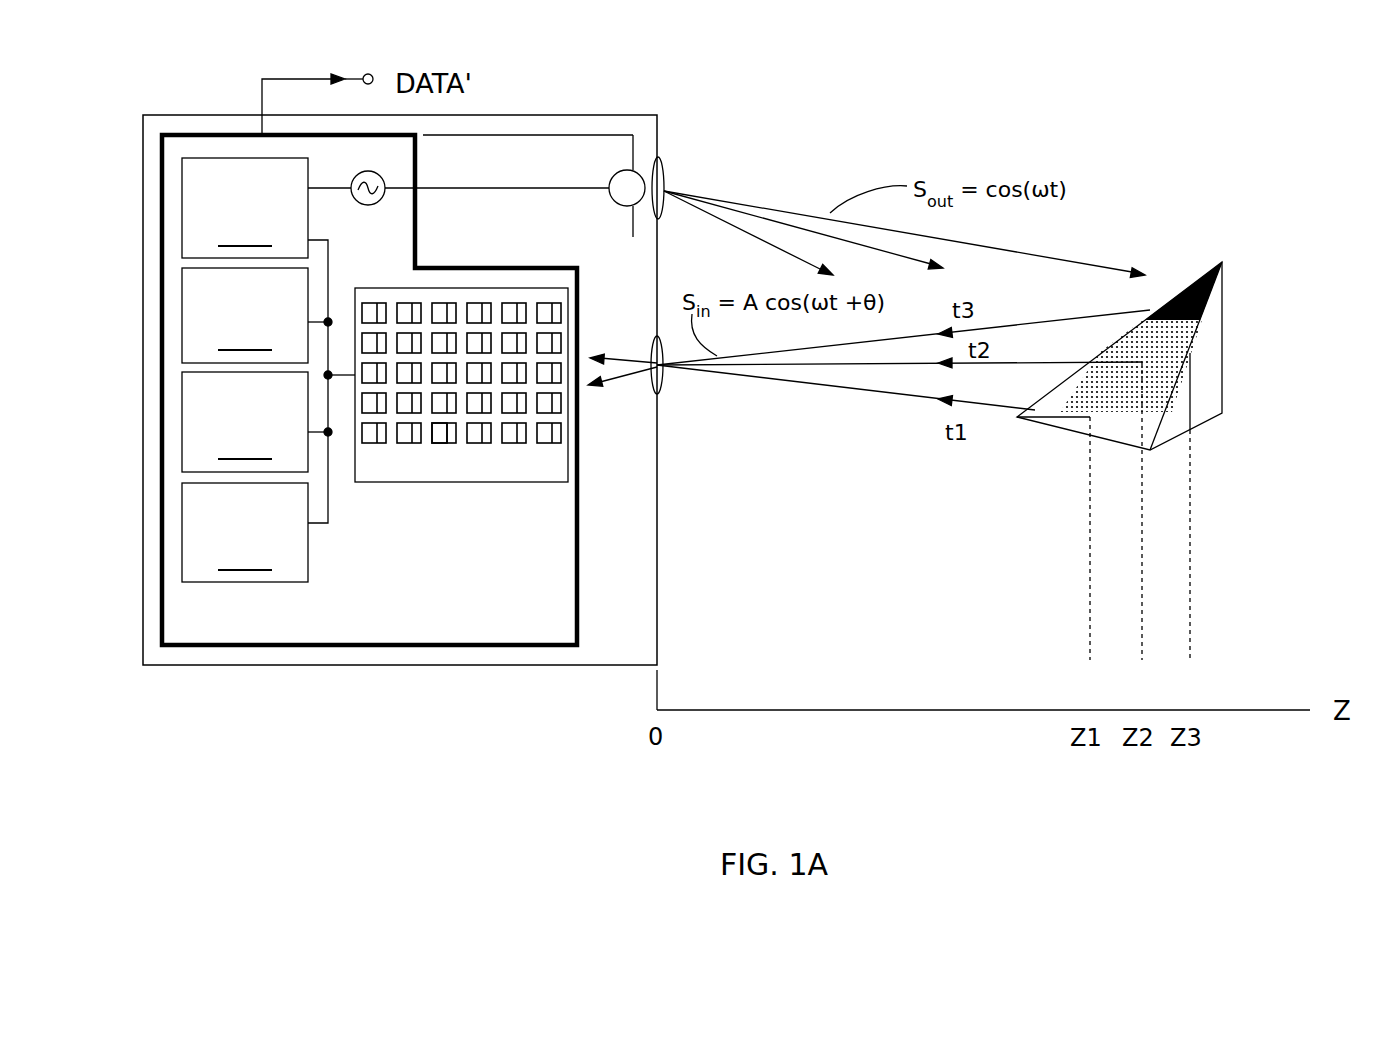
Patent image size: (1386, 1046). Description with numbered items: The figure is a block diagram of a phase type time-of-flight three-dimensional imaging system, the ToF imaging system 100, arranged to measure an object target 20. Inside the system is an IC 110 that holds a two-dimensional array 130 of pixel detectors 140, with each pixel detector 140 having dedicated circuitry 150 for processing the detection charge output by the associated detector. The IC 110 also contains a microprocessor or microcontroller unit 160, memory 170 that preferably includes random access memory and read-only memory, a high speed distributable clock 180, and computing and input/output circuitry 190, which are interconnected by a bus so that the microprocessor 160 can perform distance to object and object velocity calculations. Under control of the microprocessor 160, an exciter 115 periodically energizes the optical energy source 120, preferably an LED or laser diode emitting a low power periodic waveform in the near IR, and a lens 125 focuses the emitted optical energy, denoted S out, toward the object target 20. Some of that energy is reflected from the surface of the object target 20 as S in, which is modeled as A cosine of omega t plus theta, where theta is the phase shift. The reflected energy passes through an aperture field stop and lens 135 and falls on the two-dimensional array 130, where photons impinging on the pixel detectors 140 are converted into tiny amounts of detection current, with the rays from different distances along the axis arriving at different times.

The ToF imaging system 100 is at (208, 90).
The IC 110 is at (558, 266).
The exciter 115 is at (358, 178).
The optical energy source 120 is at (611, 177).
The lens 125 is at (670, 171).
The two-dimensional array 130 is at (453, 382).
The aperture field stop and lens 135 is at (673, 383).
The pixel detector 140 is at (450, 441).
The dedicated circuitry 150 is at (439, 441).
The microprocessor 160 is at (245, 315).
The memory 170 is at (245, 532).
The high speed distributable clock 180 is at (245, 422).
The input/output circuitry 190 is at (245, 208).
The object target 20 is at (1248, 294).